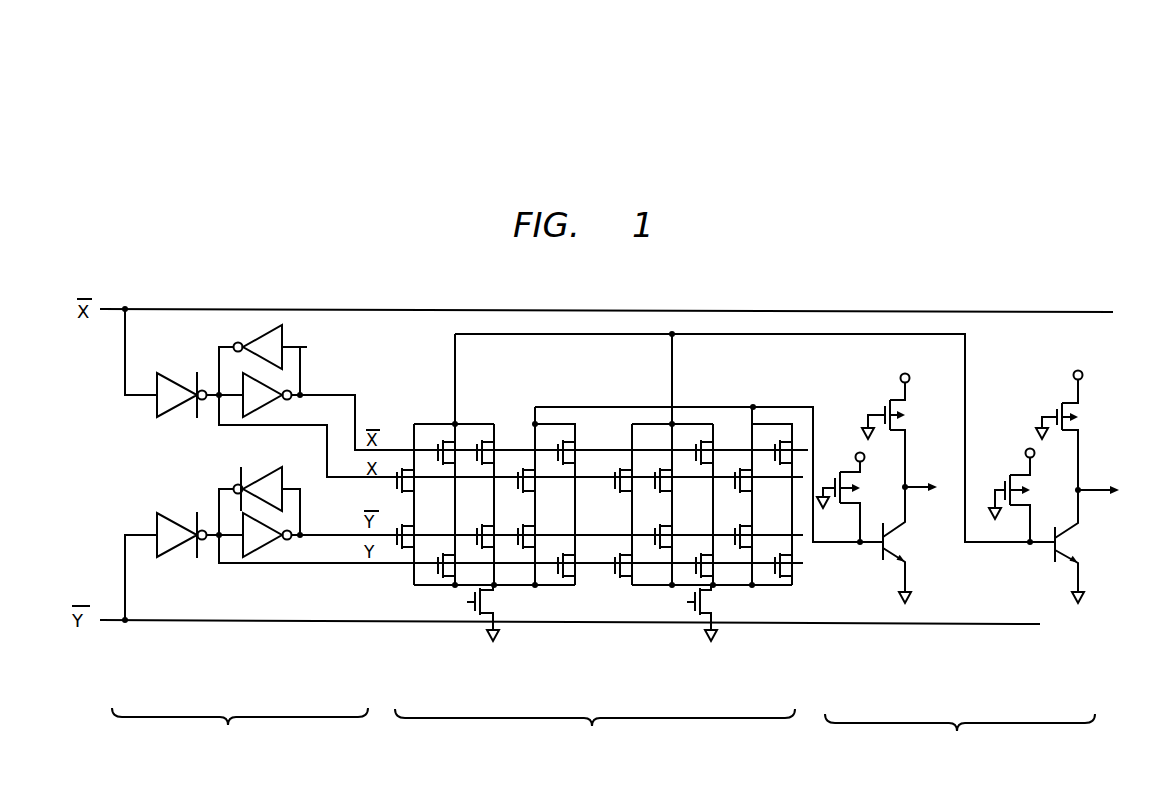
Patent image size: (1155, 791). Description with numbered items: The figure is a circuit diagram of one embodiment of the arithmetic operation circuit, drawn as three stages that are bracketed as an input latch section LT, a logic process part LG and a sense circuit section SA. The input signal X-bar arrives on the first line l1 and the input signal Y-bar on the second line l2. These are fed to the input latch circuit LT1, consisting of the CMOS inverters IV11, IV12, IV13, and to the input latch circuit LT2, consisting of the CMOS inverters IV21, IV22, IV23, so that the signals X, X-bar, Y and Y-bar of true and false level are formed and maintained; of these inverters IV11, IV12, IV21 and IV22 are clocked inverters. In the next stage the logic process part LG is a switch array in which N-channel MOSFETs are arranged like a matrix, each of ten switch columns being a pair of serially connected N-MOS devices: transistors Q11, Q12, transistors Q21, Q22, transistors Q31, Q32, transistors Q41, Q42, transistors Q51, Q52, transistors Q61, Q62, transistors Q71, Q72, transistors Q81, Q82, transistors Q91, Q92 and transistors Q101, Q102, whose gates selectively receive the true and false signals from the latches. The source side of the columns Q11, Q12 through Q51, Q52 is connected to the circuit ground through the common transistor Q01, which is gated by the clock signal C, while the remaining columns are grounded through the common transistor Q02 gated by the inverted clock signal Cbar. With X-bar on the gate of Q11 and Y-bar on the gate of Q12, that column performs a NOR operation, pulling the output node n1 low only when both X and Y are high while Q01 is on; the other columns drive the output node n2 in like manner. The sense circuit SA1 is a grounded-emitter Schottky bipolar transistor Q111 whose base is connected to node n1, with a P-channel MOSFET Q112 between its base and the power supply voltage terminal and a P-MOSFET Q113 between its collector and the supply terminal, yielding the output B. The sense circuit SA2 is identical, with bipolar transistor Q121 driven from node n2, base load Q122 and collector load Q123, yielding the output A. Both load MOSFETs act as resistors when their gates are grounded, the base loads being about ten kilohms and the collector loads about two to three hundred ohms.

The first input line l1 is at (227, 309).
The second input line l2 is at (211, 626).
The input latch circuit LT1 is at (360, 385).
The input latch circuit LT2 is at (350, 526).
The clocked CMOS inverter IV11 is at (166, 372).
The clocked CMOS inverter IV12 is at (287, 346).
The CMOS inverter IV13 is at (263, 406).
The clocked CMOS inverter IV21 is at (177, 550).
The clocked CMOS inverter IV22 is at (251, 476).
The CMOS inverter IV23 is at (263, 550).
The output node n1 is at (674, 337).
The output node n2 is at (754, 405).
The N-channel MOSFET Q11 is at (425, 490).
The N-channel MOSFET Q12 is at (424, 531).
The N-channel MOSFET Q21 is at (457, 447).
The N-channel MOSFET Q22 is at (433, 570).
The N-channel MOSFET Q31 is at (490, 459).
The N-channel MOSFET Q32 is at (495, 542).
The N-channel MOSFET Q41 is at (544, 490).
The N-channel MOSFET Q42 is at (544, 531).
The N-channel MOSFET Q51 is at (584, 446).
The N-channel MOSFET Q52 is at (577, 568).
The N-channel MOSFET Q61 is at (613, 491).
The N-channel MOSFET Q62 is at (627, 568).
The N-channel MOSFET Q71 is at (680, 490).
The N-channel MOSFET Q72 is at (680, 532).
The N-channel MOSFET Q81 is at (722, 446).
The N-channel MOSFET Q82 is at (717, 570).
The N-channel MOSFET Q91 is at (761, 490).
The N-channel MOSFET Q92 is at (761, 532).
The N-channel MOSFET Q101 is at (795, 447).
The N-channel MOSFET Q102 is at (805, 575).
The common transistor Q01 is at (502, 613).
The common transistor Q02 is at (722, 613).
The clock signal C is at (460, 606).
The inverted clock signal Cbar is at (677, 592).
The Schottky bipolar transistor Q121 is at (910, 545).
The P-channel MOSFET Q122 is at (868, 496).
The P-channel MOSFET Q123 is at (905, 416).
The Schottky bipolar transistor Q111 is at (1074, 546).
The P-channel MOSFET Q112 is at (1031, 494).
The P-channel MOSFET Q113 is at (1082, 419).
The sense circuit SA1 is at (1061, 480).
The sense circuit SA2 is at (890, 479).
The output A is at (927, 488).
The output B is at (1106, 491).
The input latch section LT is at (240, 732).
The logic process part LG is at (595, 732).
The sense circuit section SA is at (960, 739).